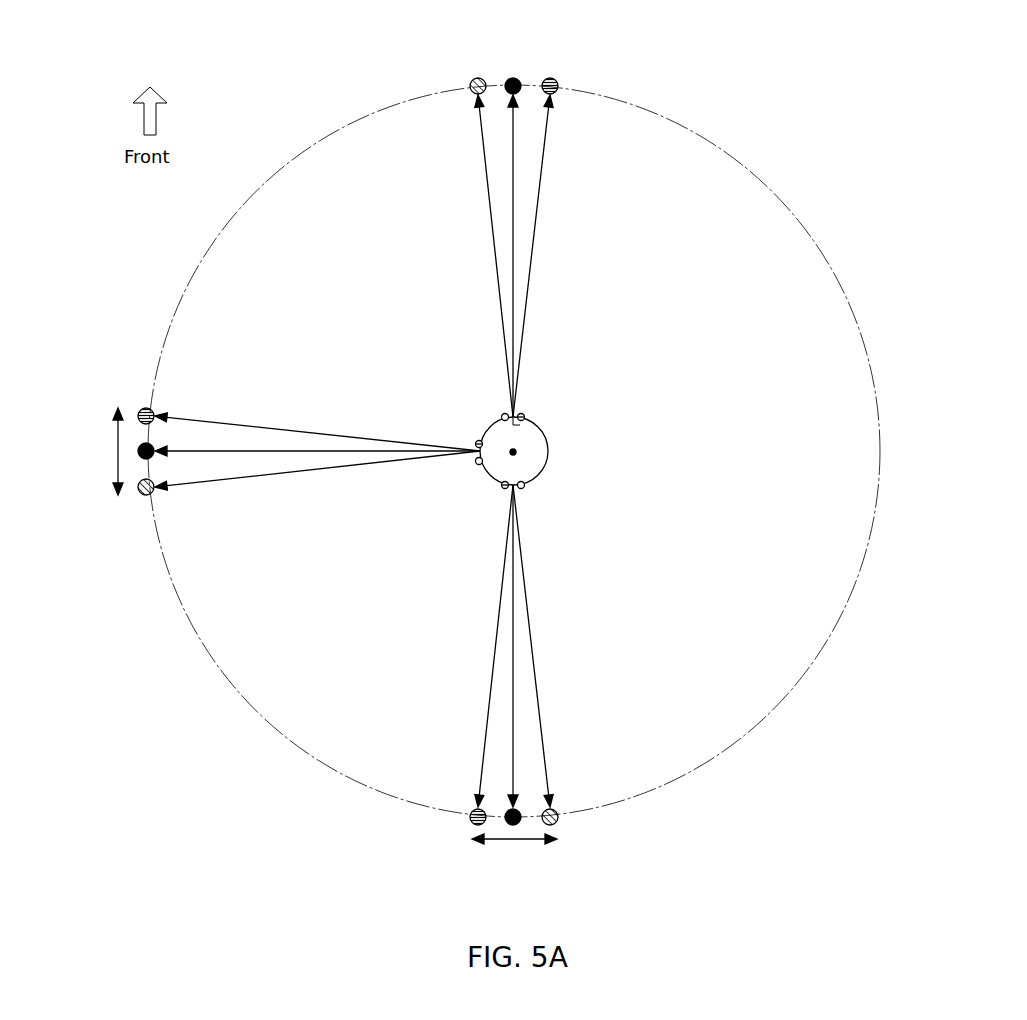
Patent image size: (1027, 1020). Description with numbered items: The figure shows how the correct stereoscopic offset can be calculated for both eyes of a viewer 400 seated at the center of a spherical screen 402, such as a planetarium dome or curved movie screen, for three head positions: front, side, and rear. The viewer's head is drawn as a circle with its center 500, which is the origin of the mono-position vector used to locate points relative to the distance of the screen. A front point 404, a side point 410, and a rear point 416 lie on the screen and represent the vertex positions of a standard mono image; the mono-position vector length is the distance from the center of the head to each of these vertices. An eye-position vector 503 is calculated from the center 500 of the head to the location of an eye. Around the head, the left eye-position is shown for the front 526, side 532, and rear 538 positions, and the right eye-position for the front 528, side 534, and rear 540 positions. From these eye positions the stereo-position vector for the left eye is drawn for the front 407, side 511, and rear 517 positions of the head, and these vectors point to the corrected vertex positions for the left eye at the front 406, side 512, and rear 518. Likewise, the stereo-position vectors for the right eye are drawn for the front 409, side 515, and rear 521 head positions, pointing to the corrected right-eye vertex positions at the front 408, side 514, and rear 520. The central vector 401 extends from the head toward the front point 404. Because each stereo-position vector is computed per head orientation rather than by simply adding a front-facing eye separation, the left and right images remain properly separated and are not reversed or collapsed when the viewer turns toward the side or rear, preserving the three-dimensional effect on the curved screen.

The viewer 400 is at (548, 443).
The sound path to front center speaker 401 is at (513, 208).
The spherical screen 402 is at (712, 761).
The front point 404 is at (513, 77).
The corrected front vertex position for the left eye 406 is at (471, 80).
The stereo-position vector for the left eye, front position 407 is at (483, 172).
The corrected front vertex position for the right eye 408 is at (556, 80).
The stereo-position vector for the right eye, front position 409 is at (543, 175).
The side point 410 is at (138, 452).
The rear point 416 is at (513, 825).
The center of the observer's head 500 is at (516, 452).
The eye-position vector 503 is at (522, 423).
The stereo-position vector for the left eye, side position 511 is at (235, 480).
The corrected side vertex position for the left eye 512 is at (140, 493).
The corrected side vertex position for the right eye 514 is at (140, 410).
The stereo-position vector for the right eye, side position 515 is at (250, 425).
The stereo-position vector for the left eye, rear position 517 is at (540, 715).
The corrected rear vertex position for the left eye 518 is at (555, 822).
The corrected rear vertex position for the right eye 520 is at (474, 822).
The stereo-position vector for the right eye, rear position 521 is at (490, 720).
The left eye-position, front 526 is at (505, 414).
The right eye-position, front 528 is at (524, 414).
The left eye-position, side 532 is at (476, 461).
The right eye-position, side 534 is at (476, 444).
The left eye-position, rear 538 is at (524, 488).
The right eye-position, rear 540 is at (505, 488).